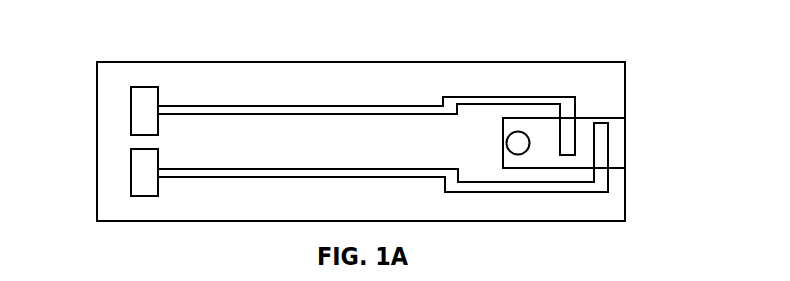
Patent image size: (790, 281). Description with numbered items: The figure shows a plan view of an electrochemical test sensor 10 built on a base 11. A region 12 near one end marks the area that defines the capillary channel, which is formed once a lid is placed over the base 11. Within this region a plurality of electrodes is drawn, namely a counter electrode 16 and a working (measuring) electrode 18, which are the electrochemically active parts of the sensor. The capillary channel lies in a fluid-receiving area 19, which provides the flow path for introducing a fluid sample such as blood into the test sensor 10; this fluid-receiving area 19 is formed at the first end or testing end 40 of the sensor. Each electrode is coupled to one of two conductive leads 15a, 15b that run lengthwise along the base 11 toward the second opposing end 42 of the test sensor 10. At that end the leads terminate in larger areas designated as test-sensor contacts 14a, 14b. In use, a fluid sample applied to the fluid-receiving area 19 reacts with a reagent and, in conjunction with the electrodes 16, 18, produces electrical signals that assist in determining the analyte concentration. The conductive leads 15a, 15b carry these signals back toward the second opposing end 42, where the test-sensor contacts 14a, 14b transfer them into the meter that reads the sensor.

The test sensor 10 is at (70, 163).
The base 11 is at (294, 78).
The region 12 is at (617, 143).
The test-sensor contact 14a is at (143, 110).
The test-sensor contact 14b is at (143, 172).
The conductive lead 15a is at (395, 115).
The conductive lead 15b is at (312, 168).
The counter electrode 16 is at (564, 132).
The working electrode 18 is at (602, 153).
The fluid-receiving area 19 is at (617, 123).
The testing end 40 is at (634, 52).
The second opposing end 42 is at (91, 52).